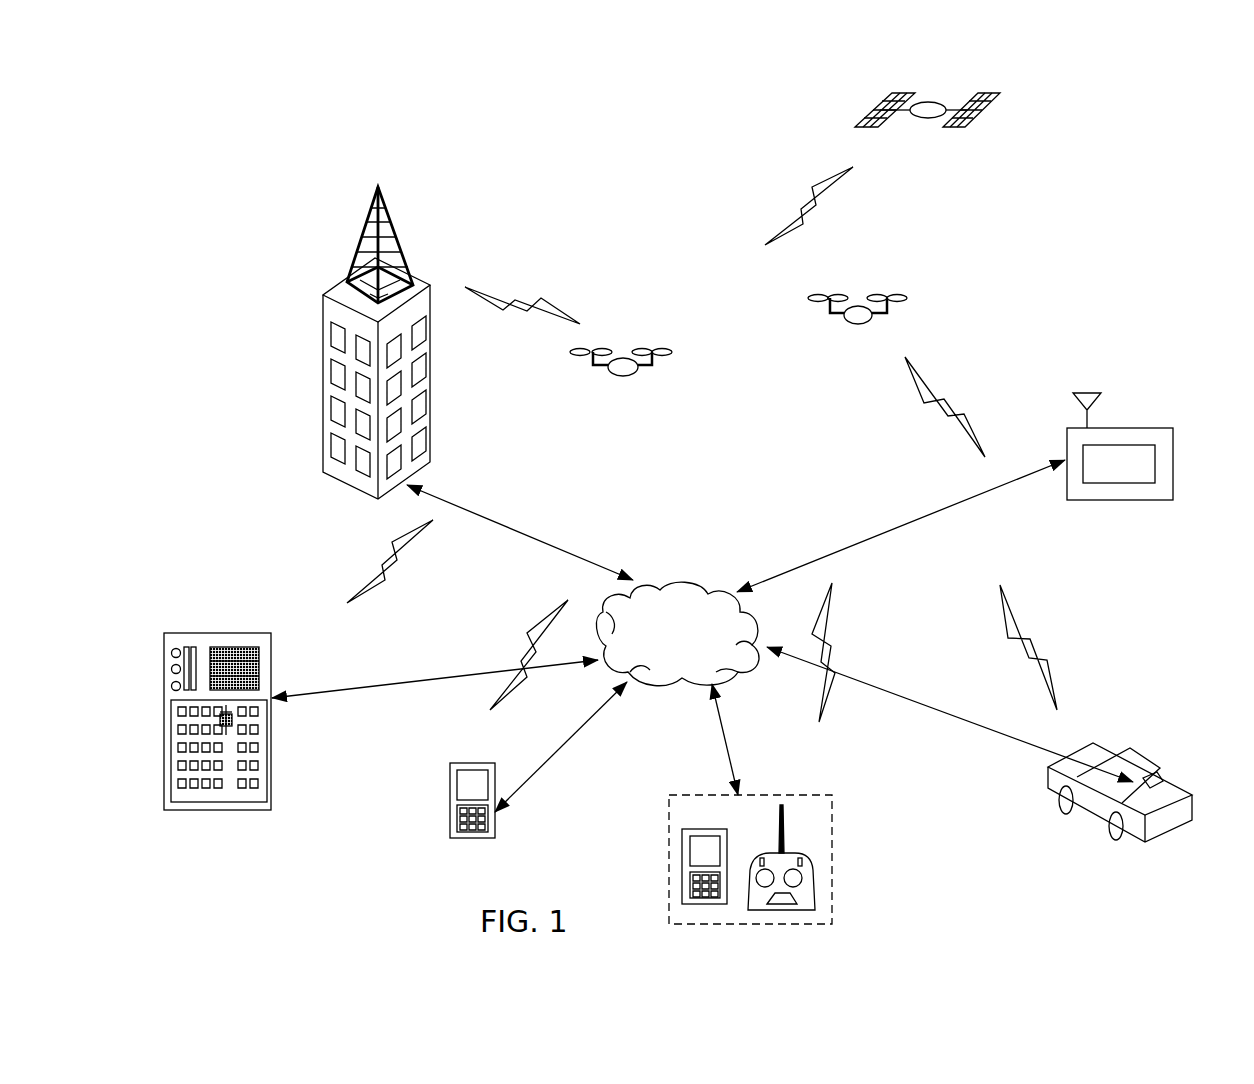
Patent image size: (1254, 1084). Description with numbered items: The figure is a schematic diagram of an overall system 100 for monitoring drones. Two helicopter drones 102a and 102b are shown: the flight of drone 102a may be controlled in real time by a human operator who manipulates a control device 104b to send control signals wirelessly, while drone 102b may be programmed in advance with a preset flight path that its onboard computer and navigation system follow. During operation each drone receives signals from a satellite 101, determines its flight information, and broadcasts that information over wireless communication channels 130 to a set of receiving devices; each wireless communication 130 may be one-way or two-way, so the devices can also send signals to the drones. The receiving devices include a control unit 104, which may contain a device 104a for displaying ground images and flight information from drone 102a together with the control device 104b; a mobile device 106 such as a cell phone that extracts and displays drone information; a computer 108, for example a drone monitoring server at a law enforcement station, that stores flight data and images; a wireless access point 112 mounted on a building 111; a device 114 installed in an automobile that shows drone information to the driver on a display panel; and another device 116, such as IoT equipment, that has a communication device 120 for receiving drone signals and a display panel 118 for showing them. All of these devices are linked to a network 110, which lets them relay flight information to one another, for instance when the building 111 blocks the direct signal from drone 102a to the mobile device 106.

The system 100 is at (268, 120).
The satellite 101 is at (990, 103).
The helicopter drone 102a is at (662, 352).
The helicopter drone 102b is at (905, 298).
The control unit 104 is at (833, 815).
The device for displaying 104a is at (682, 829).
The control device 104b is at (813, 877).
The mobile device 106 is at (475, 763).
The computer 108 is at (255, 810).
The network 110 is at (658, 580).
The building 111 is at (323, 387).
The wireless access point 112 is at (403, 260).
The device installed in an automobile 114 is at (1160, 768).
The device 116 is at (1138, 428).
The display panel 118 is at (1155, 458).
The communication device 120 is at (1090, 393).
The wireless communication channel 130 is at (816, 205).